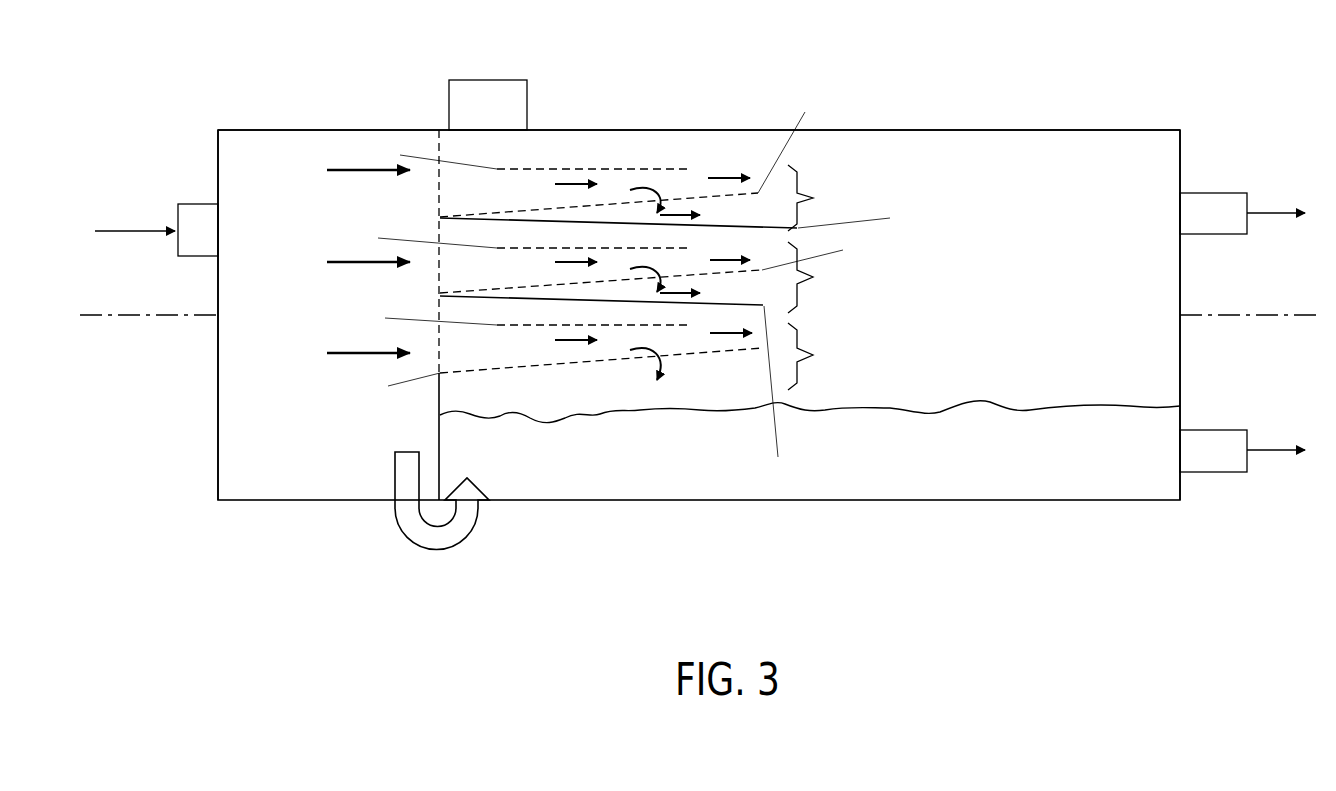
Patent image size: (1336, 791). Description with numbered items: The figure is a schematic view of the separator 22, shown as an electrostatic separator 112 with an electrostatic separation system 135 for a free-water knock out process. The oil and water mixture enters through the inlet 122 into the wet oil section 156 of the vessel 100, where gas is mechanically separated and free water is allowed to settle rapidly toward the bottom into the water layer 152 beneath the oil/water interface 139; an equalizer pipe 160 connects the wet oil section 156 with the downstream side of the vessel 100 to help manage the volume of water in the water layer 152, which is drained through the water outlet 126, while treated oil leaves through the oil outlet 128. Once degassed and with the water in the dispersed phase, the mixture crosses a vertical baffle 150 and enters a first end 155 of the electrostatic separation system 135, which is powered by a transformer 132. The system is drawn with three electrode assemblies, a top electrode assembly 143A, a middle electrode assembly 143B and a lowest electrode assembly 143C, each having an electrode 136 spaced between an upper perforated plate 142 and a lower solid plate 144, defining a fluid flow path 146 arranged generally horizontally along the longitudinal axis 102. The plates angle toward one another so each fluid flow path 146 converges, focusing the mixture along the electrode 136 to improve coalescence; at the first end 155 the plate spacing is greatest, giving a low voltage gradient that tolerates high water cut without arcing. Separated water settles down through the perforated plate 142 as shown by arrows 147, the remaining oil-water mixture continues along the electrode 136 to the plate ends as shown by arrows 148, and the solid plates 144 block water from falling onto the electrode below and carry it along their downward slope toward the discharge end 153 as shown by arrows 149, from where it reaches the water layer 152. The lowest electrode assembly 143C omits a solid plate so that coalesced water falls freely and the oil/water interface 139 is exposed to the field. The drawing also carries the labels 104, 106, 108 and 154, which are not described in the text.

The separator 22 is at (293, 118).
The vessel 100 is at (1018, 128).
The longitudinal axis 102 is at (143, 318).
The inlet end wall 104 is at (218, 448).
The outlet end wall 106 is at (1180, 276).
The top wall 108 is at (917, 130).
The electrostatic separator 112 is at (698, 94).
The inlet 122 is at (218, 204).
The water outlet 126 is at (1182, 430).
The oil outlet 128 is at (1183, 196).
The transformer 132 is at (491, 80).
The electrostatic separation system 135 is at (636, 128).
The electrodes 136 is at (521, 168).
The oil/water interface 139 is at (1030, 406).
The perforated plates 142 is at (523, 210).
The top electrode assembly 143A is at (830, 198).
The middle electrode assembly 143B is at (830, 277).
The lowest electrode assembly 143C is at (830, 356).
The solid plates 144 is at (726, 228).
The fluid flow path 146 is at (575, 182).
The arrows 147 is at (650, 185).
The arrows 148 is at (730, 172).
The arrows 149 is at (680, 222).
The vertical baffle 150 is at (437, 188).
The water layer 152 is at (1062, 442).
The discharge end 153 is at (848, 318).
The dry oil section 154 is at (1127, 229).
The first end 155 is at (437, 122).
The wet oil section 156 is at (346, 436).
The equalizer pipe 160 is at (470, 533).